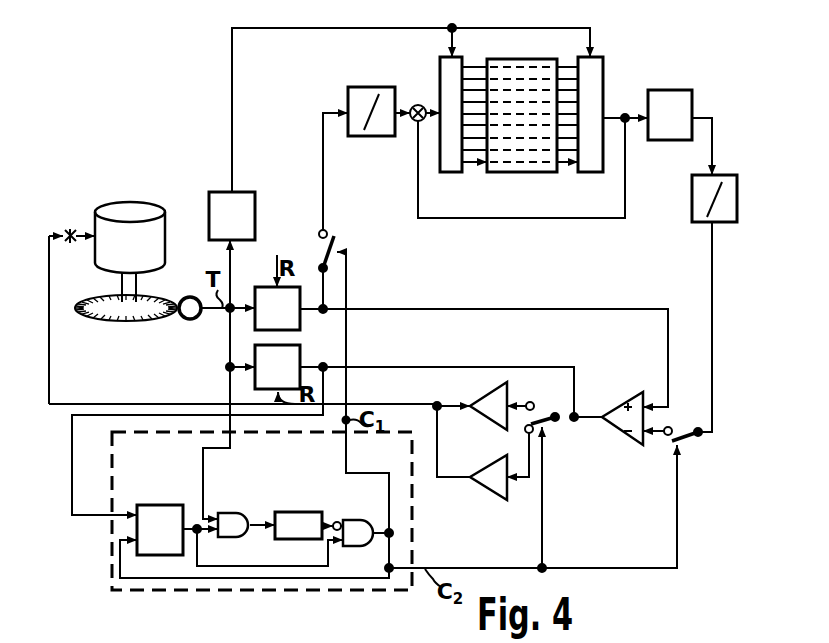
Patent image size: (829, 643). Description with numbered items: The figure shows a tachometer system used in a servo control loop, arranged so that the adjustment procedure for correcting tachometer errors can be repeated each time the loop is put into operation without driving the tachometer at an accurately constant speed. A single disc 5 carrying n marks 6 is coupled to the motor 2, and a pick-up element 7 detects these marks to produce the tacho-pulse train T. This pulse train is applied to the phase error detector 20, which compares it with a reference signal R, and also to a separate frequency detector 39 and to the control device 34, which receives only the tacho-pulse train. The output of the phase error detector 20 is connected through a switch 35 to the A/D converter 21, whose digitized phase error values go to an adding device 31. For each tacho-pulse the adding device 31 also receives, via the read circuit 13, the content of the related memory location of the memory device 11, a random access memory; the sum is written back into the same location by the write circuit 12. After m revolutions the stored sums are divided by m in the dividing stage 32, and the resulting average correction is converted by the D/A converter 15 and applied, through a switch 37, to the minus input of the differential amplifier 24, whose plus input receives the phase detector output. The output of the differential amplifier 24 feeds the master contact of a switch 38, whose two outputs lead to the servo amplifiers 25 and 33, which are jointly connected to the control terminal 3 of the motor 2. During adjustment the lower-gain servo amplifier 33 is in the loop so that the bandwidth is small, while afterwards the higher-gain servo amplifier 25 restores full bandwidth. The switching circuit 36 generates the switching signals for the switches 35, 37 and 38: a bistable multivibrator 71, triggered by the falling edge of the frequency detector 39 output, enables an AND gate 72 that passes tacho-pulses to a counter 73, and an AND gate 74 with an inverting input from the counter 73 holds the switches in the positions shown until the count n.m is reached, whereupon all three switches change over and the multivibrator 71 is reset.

The motor 2 is at (167, 207).
The control terminal 3 is at (70, 232).
The disc 5 is at (104, 323).
The marks 6 is at (92, 296).
The pick-up element 7 is at (192, 319).
The memory device 11 is at (518, 173).
The write circuit 12 is at (457, 173).
The read circuit 13 is at (590, 173).
The D/A converter 15 is at (692, 190).
The phase error detector 20 is at (264, 286).
The A/D converter 21 is at (363, 87).
The differential amplifier 24 is at (612, 430).
The servo amplifier 25 is at (485, 394).
The adding device 31 is at (416, 104).
The dividing stage 32 is at (670, 88).
The servo amplifier 33 is at (472, 485).
The control device 34 is at (255, 215).
The switch 35 is at (334, 246).
The switching circuit 36 is at (288, 598).
The switch 37 is at (692, 440).
The switch 38 is at (542, 414).
The frequency detector 39 is at (300, 349).
The bistable multivibrator 71 is at (168, 505).
The AND gate 72 is at (236, 512).
The counter 73 is at (308, 512).
The AND gate 74 is at (353, 547).